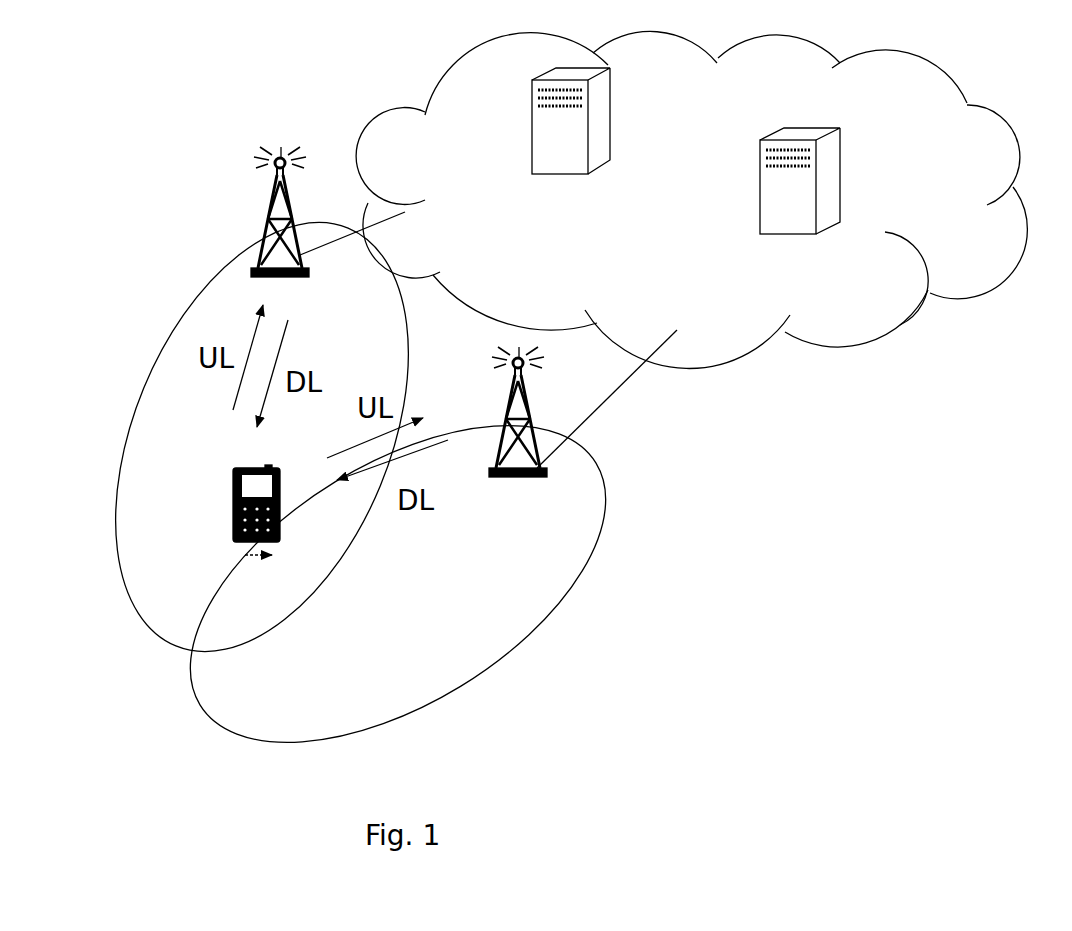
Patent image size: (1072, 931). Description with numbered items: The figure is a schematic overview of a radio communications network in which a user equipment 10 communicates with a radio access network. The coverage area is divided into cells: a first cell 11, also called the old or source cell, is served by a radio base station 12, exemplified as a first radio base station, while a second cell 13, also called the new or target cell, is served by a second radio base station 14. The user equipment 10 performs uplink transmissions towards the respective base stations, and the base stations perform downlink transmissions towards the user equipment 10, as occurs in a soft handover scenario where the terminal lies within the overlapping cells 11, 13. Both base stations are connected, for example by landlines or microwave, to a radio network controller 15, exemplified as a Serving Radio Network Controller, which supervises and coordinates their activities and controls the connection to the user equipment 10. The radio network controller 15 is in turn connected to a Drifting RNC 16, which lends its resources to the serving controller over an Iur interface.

The user equipment 10 is at (276, 491).
The first cell 11 is at (188, 471).
The radio base station 12 is at (302, 218).
The second cell 13 is at (444, 611).
The second radio base station 14 is at (510, 410).
The radio network controller 15 is at (603, 142).
The Drifting RNC 16 is at (822, 222).